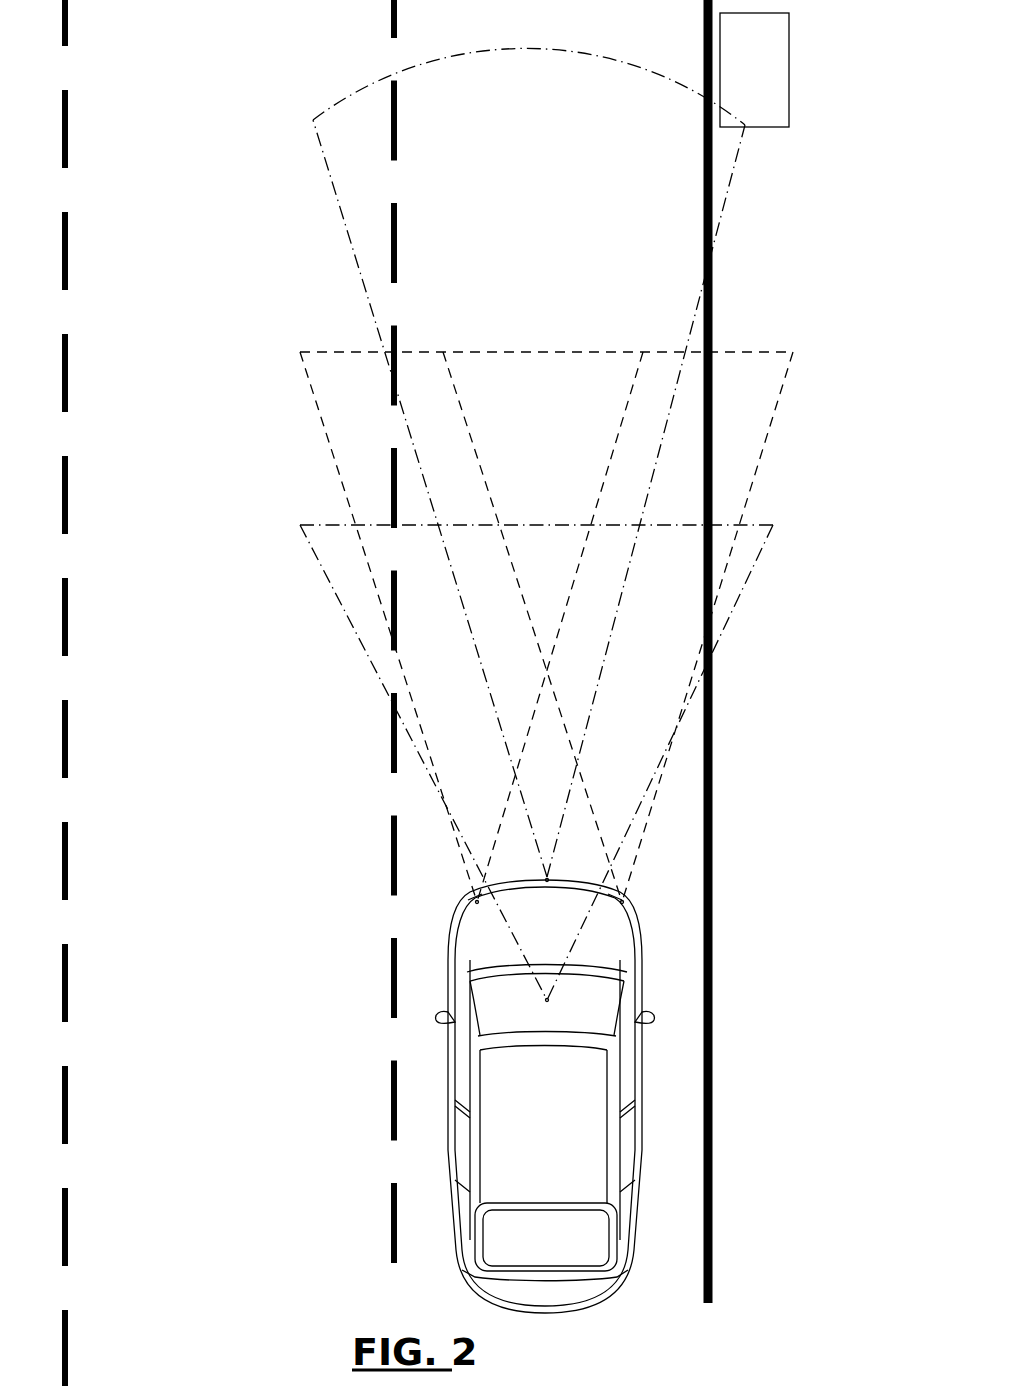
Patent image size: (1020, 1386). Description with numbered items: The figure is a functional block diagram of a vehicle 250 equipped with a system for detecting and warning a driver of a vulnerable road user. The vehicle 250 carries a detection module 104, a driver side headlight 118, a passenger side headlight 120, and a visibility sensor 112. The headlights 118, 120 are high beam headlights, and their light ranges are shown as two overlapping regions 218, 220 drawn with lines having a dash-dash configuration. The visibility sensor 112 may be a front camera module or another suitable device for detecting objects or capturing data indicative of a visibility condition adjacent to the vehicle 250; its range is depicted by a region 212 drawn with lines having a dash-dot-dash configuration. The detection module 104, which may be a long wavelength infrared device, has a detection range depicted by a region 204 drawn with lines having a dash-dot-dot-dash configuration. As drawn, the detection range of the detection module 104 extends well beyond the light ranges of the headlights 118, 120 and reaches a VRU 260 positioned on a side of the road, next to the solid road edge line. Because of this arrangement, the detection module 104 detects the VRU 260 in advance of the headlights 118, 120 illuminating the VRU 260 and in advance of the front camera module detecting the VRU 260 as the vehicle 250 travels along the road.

The detection module 104 is at (548, 883).
The visibility sensor 112 is at (547, 1000).
The driver side headlight 118 is at (477, 902).
The passenger side headlight 120 is at (622, 902).
The region 204 is at (470, 53).
The region 212 is at (348, 622).
The overlapping region 218 is at (323, 425).
The overlapping region 220 is at (770, 434).
The vehicle 250 is at (636, 1098).
The VRU 260 is at (789, 68).